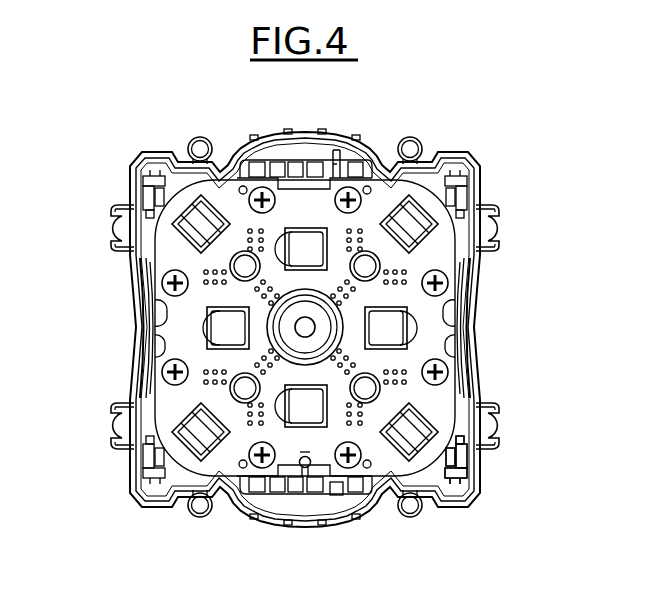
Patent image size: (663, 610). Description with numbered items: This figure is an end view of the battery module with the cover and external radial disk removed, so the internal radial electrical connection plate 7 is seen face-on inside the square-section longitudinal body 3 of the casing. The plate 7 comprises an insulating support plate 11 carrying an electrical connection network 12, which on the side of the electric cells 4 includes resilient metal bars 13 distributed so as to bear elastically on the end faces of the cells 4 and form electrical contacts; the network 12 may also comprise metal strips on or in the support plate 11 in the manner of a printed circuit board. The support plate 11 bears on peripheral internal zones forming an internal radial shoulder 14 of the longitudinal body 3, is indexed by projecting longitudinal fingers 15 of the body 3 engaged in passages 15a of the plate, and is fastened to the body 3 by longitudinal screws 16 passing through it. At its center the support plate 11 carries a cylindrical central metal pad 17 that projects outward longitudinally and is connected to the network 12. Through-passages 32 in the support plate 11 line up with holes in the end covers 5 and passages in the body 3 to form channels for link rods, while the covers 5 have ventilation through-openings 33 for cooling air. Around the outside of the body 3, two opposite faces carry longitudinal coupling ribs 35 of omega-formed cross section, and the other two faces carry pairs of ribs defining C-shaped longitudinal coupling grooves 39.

The longitudinal body 3 is at (128, 190).
The electric cells 4 is at (198, 137).
The end covers 5 is at (295, 167).
The internal radial electrical connection plate 7 is at (446, 332).
The support plate 11 is at (430, 407).
The electrical connection network 12 is at (207, 233).
The resilient metal bars 13 is at (111, 214).
The internal radial shoulder 14 is at (238, 160).
The projecting longitudinal fingers 15 is at (306, 468).
The passages 15a is at (293, 450).
The longitudinal screws 16 is at (476, 291).
The cylindrical central metal pad 17 is at (292, 337).
The through-passages 32 is at (240, 388).
The ventilation through-openings 33 is at (319, 170).
The longitudinal coupling ribs 35 is at (410, 138).
The longitudinal coupling grooves 39 is at (500, 228).